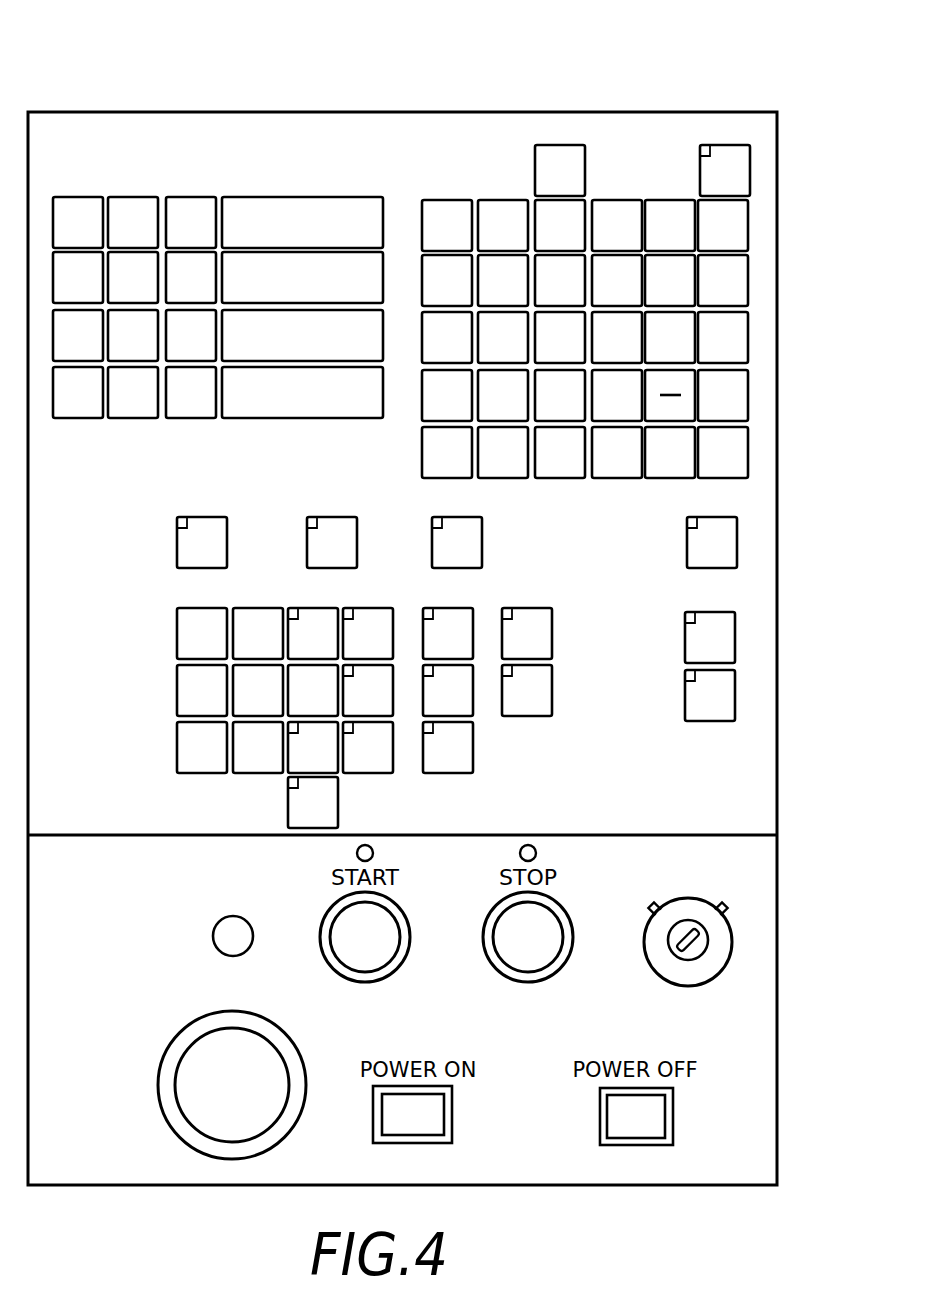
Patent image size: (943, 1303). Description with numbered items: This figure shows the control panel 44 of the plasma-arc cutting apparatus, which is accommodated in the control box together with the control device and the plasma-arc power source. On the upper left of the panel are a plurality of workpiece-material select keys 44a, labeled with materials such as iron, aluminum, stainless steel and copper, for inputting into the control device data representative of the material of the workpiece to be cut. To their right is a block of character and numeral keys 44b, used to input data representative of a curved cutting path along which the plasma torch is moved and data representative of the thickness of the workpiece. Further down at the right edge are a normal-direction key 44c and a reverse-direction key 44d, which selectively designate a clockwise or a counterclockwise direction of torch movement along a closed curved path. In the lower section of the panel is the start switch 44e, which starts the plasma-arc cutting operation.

The control panel 44 is at (58, 84).
The workpiece-material select keys 44a is at (285, 170).
The character and numeral keys 44b is at (776, 227).
The normal-direction key 44c is at (727, 637).
The reverse-direction key 44d is at (725, 691).
The start switch 44e is at (365, 957).